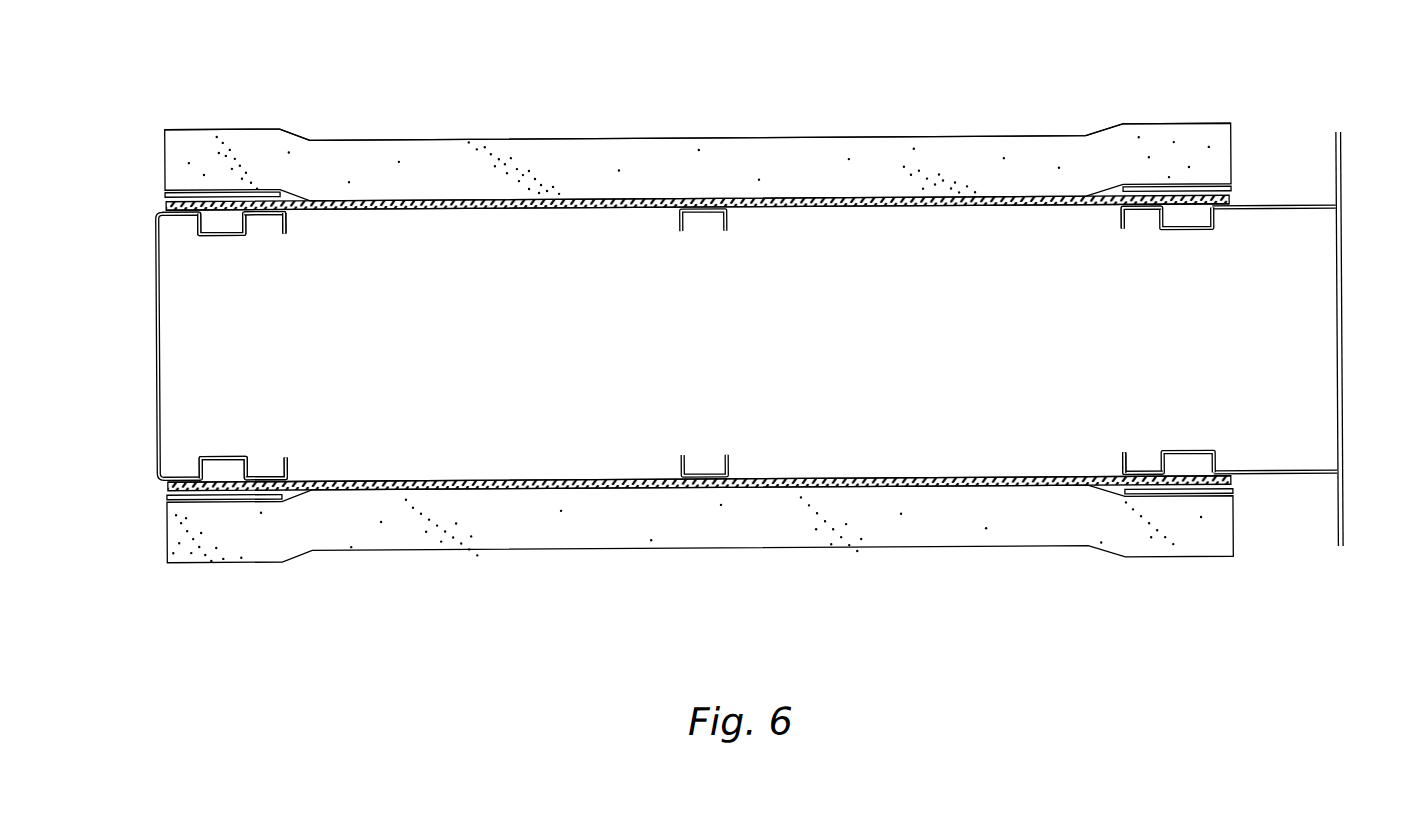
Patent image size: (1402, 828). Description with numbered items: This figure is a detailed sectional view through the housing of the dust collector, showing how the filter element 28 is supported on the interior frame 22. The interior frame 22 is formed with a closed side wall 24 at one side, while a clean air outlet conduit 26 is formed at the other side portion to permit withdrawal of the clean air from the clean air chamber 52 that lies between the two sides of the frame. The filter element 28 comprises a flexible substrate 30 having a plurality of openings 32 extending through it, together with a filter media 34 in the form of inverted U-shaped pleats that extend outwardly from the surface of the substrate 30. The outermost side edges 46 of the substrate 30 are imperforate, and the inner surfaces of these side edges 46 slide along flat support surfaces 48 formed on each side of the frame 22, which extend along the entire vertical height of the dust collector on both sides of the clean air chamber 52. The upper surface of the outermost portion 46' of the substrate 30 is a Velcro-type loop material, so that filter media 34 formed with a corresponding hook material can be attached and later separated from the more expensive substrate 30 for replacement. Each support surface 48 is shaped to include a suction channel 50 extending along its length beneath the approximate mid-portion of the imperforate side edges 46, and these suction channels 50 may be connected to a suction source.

The interior frame 22 is at (307, 228).
The closed side wall 24 is at (157, 340).
The clean air outlet conduit 26 is at (1340, 335).
The filter element 28 is at (742, 132).
The flexible substrate 30 is at (1067, 208).
The openings 32 is at (1010, 208).
The filter media 34 is at (977, 158).
The outermost side edges 46 is at (703, 341).
The outermost portion 46' is at (662, 354).
The flat support surfaces 48 is at (158, 209).
The suction channel 50 is at (223, 226).
The clean air chamber 52 is at (688, 358).